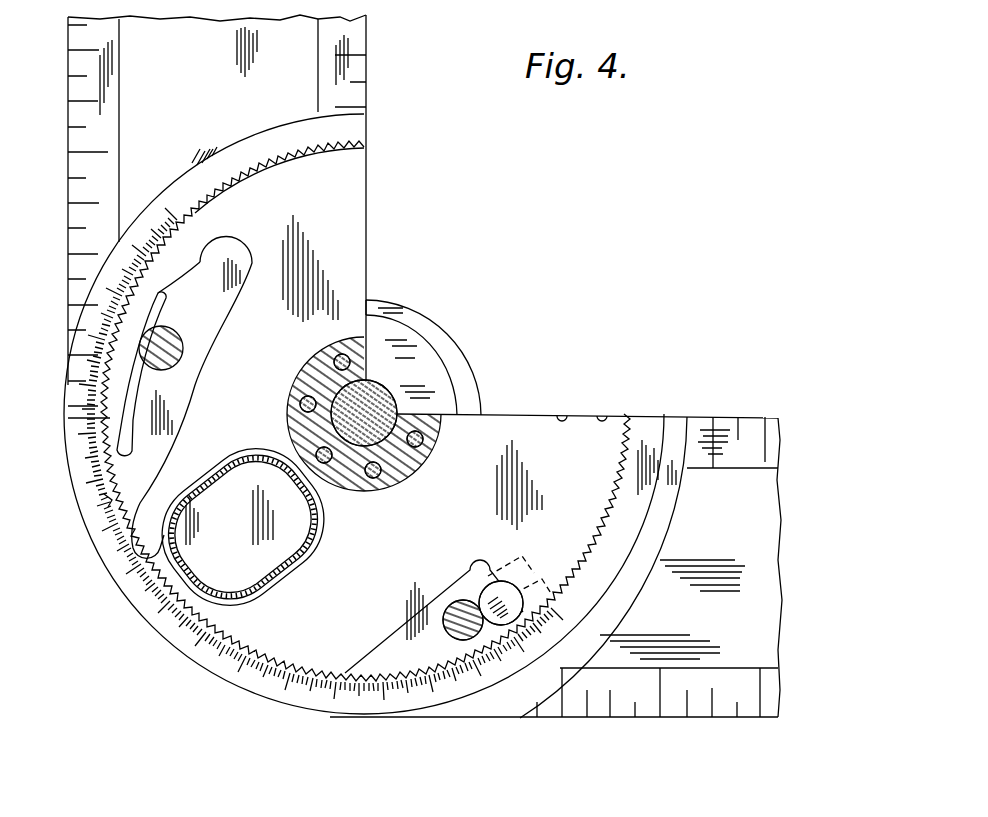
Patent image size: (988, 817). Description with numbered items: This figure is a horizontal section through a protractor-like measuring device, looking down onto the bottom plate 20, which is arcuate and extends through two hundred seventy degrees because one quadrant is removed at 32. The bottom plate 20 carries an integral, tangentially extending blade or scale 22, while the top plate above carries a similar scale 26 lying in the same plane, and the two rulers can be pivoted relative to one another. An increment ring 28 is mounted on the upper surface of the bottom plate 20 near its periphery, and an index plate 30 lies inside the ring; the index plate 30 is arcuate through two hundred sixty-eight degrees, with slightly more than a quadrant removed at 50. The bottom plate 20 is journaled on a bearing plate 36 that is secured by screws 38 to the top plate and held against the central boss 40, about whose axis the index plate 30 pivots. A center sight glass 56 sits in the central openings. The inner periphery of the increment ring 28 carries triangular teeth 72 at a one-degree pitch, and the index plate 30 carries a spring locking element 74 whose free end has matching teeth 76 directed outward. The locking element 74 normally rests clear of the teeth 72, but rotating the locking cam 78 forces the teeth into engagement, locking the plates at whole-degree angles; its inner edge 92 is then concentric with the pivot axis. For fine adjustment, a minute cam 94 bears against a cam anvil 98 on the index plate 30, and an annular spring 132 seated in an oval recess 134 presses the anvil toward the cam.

The bottom plate 20 is at (513, 416).
The blade or scale 22 is at (97, 133).
The blade or scale 26 is at (680, 708).
The increment ring 28 is at (150, 608).
The index plate 30 is at (283, 647).
The removed quadrant 32 is at (562, 417).
The bearing plate 36 is at (460, 360).
The screws 38 is at (425, 440).
The boss 40 is at (413, 463).
The removed portion of index plate 50 is at (605, 417).
The center sight glass 56 is at (380, 392).
The triangular teeth 72 is at (110, 501).
The spring locking element 74 is at (132, 325).
The triangular teeth 76 is at (68, 418).
The locking cam 78 is at (140, 364).
The inner edge 92 is at (120, 265).
The minute cam 94 is at (463, 640).
The cam anvil 98 is at (510, 616).
The spring 132 is at (202, 596).
The recess 134 is at (160, 548).